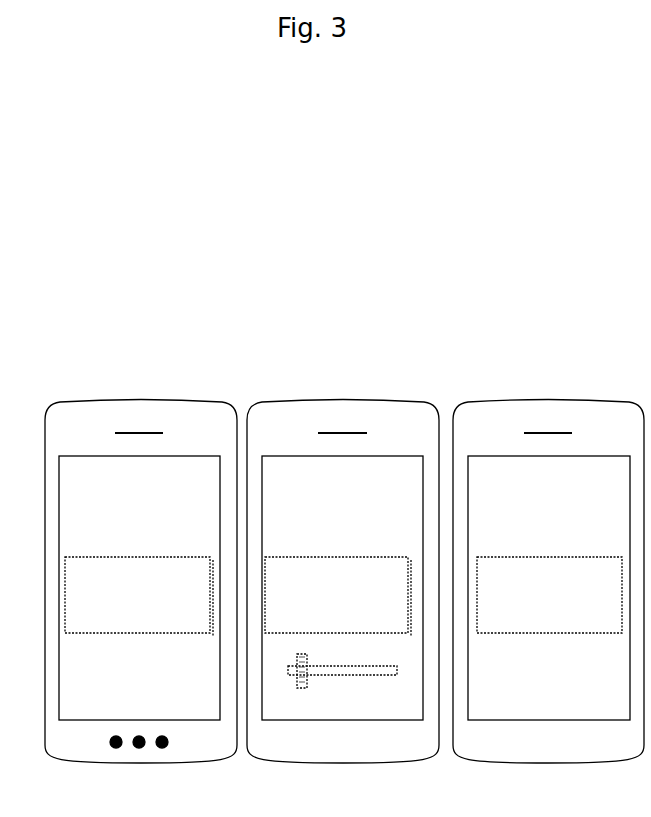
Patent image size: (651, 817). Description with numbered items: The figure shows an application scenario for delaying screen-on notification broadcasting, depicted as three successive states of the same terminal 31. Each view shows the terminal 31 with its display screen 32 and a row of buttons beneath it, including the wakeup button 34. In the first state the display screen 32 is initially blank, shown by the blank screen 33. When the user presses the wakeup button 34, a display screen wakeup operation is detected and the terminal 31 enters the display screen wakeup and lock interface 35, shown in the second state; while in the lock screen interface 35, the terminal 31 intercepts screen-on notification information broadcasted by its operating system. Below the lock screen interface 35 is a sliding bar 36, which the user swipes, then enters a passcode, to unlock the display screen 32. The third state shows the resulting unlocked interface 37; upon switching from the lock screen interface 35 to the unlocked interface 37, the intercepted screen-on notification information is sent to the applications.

The terminal 31 is at (93, 433).
The display screen 32 is at (203, 470).
The blank screen 33 is at (170, 590).
The wakeup button 34 is at (116, 730).
The lock screen interface 35 is at (362, 583).
The sliding bar 36 is at (315, 673).
The unlocked interface 37 is at (533, 577).